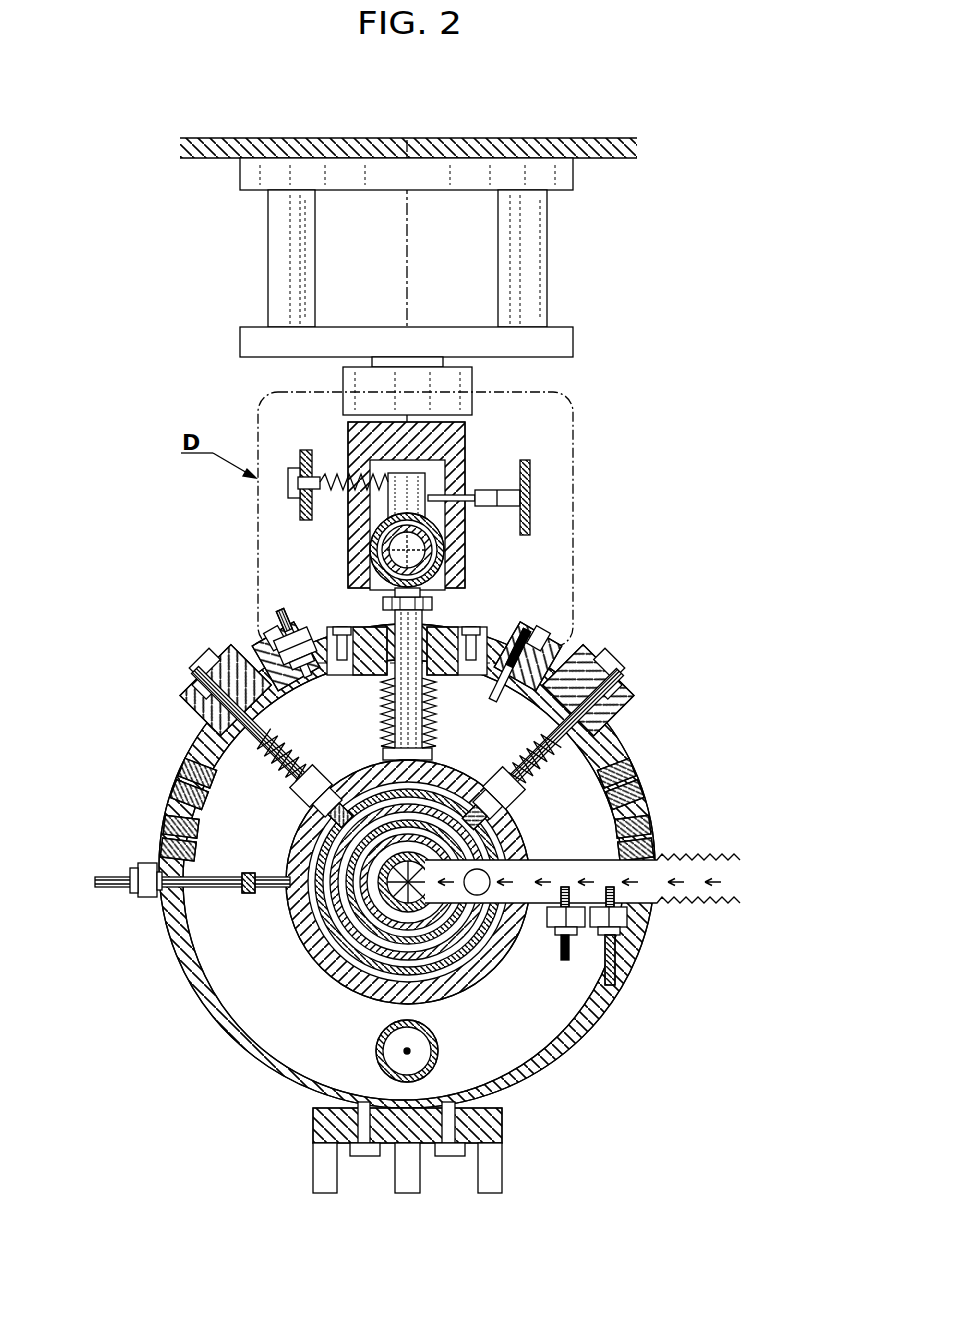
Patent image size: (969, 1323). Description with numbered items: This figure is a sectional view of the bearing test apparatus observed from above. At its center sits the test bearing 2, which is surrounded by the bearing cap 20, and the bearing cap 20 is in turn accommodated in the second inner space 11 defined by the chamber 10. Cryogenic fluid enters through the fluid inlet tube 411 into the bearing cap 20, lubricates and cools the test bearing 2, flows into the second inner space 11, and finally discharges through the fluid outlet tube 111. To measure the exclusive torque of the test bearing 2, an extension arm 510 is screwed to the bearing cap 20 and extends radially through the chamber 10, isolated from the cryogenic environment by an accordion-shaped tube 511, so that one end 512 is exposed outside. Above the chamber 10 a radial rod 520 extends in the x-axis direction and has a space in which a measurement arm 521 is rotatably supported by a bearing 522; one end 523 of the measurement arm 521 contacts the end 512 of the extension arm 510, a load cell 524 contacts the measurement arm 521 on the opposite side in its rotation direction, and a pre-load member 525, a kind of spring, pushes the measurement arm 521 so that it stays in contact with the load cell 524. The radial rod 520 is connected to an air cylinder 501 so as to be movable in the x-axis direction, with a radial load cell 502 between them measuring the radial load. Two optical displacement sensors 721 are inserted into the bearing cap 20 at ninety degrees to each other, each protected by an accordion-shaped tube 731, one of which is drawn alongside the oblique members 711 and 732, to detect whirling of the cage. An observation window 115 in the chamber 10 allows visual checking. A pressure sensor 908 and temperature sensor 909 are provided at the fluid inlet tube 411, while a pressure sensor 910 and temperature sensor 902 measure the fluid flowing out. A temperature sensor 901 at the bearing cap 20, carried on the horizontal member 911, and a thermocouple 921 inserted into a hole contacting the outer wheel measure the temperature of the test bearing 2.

The test bearing 2 is at (404, 945).
The chamber 10 is at (592, 1052).
The second inner space 11 is at (275, 1012).
The bearing cap 20 is at (367, 997).
The fluid outlet tube 111 is at (440, 1050).
The observation window 115 is at (170, 776).
The fluid inlet tube 411 is at (590, 860).
The air cylinder 501 is at (492, 246).
The radial load cell 502 is at (474, 375).
The extension arm 510 is at (422, 622).
The tube 511 is at (437, 712).
The one end of the extension arm 512 is at (432, 600).
The radial rod 520 is at (348, 431).
The measurement arm 521 is at (424, 473).
The bearing 522 is at (443, 537).
The one end of the measurement arm 523 is at (383, 600).
The load cell 524 is at (498, 490).
The pre-load member 525 is at (333, 490).
The first side rod 711 is at (197, 673).
The optical displacement sensor 721 is at (303, 830).
The tube 731 is at (285, 742).
The second side rod 732 is at (620, 740).
The temperature sensor 901 is at (145, 898).
The temperature sensor 902 is at (280, 612).
The pressure sensor 908 is at (560, 950).
The temperature sensor 909 is at (618, 967).
The pressure sensor 910 is at (529, 633).
The horizontal shaft 911 is at (205, 889).
The thermocouple 921 is at (249, 894).